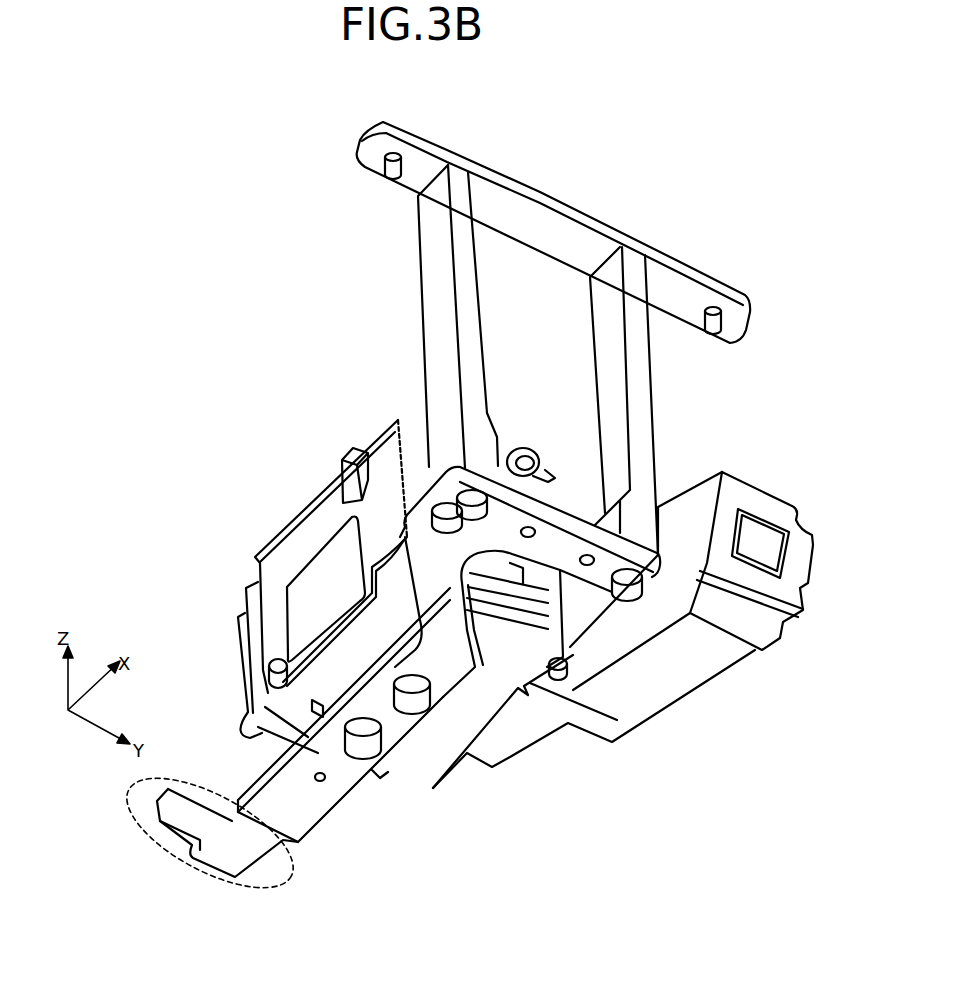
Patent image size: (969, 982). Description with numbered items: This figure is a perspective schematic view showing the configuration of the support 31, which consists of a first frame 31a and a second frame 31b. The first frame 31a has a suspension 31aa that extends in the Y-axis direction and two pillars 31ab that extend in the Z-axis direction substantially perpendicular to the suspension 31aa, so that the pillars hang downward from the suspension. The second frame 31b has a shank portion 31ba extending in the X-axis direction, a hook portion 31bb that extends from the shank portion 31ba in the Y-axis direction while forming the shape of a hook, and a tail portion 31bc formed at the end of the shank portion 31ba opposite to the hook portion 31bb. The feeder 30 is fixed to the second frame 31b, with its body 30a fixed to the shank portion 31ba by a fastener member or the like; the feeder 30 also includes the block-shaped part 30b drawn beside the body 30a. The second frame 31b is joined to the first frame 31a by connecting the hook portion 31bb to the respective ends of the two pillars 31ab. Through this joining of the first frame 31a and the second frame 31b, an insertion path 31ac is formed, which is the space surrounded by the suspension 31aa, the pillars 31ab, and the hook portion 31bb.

The feeder 30 is at (720, 815).
The body 30a is at (558, 623).
The mount block 30b is at (672, 668).
The support 31 is at (262, 320).
The first frame 31a is at (405, 366).
The suspension 31aa is at (563, 209).
The pillars 31ab is at (465, 270).
The insertion path 31ac is at (563, 397).
The second frame 31b is at (238, 788).
The shank portion 31ba is at (313, 808).
The hook portion 31bb is at (502, 535).
The tail portion 31bc is at (188, 868).